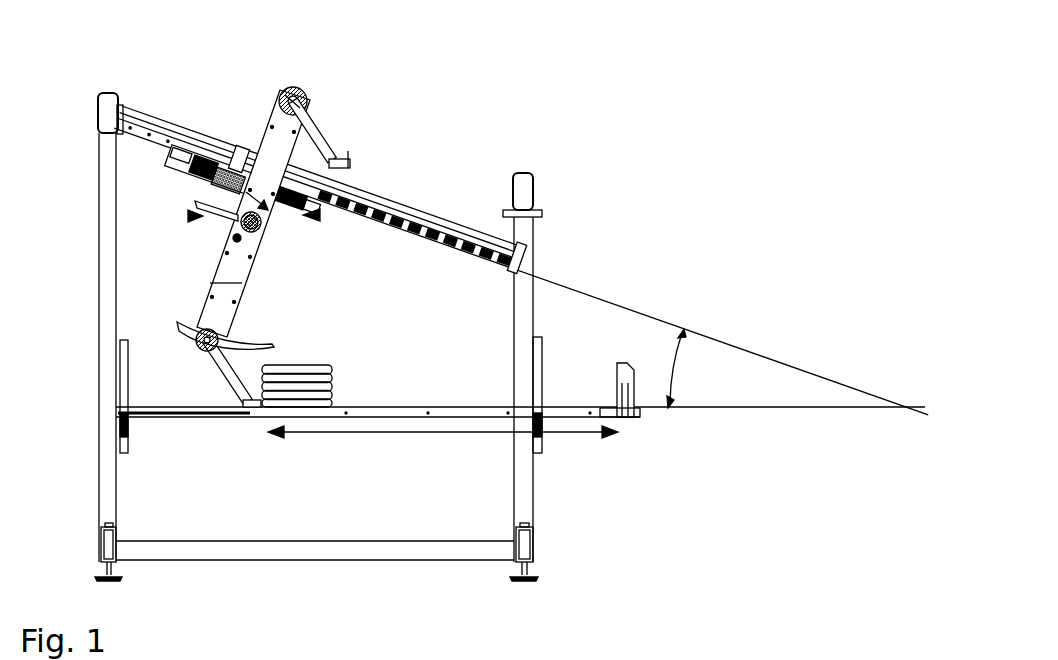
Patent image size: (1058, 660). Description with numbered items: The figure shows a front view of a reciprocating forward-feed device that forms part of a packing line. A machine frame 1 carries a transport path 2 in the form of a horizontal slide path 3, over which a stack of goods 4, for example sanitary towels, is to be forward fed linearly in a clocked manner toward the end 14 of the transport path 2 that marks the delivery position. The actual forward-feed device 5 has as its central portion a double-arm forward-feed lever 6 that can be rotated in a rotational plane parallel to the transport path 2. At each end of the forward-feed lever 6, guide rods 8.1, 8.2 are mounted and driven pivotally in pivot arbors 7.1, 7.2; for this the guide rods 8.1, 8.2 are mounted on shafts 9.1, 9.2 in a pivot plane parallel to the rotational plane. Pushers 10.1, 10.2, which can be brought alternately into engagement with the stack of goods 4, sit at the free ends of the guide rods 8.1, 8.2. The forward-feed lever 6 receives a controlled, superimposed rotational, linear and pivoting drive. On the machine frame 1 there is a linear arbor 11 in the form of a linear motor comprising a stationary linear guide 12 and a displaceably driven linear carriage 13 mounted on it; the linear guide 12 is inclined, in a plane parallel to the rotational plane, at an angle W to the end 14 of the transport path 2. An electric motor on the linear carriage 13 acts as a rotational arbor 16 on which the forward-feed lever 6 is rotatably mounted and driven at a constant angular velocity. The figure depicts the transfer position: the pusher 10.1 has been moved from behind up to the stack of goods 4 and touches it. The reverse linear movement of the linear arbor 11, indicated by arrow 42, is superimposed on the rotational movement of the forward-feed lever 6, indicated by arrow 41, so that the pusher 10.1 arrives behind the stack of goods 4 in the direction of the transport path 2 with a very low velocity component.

The machine frame 1 is at (265, 559).
The transport path 2 is at (453, 433).
The horizontal slide path 3 is at (378, 406).
The stack of goods 4 is at (304, 366).
The forward-feed device 5 is at (189, 215).
The forward-feed lever 6 is at (215, 277).
The pivot arbor 7.1 is at (196, 343).
The pivot arbor 7.2 is at (298, 90).
The guide rod 8.1 is at (227, 377).
The guide rod 8.2 is at (330, 145).
The shaft 9.1 is at (178, 325).
The shaft 9.2 is at (283, 90).
The pusher 10.1 is at (241, 403).
The pusher 10.2 is at (352, 158).
The linear arbor 11 is at (407, 207).
The linear guide 12 is at (450, 230).
The linear carriage 13 is at (237, 148).
The end of the transport path 14 is at (627, 419).
The rotational arbor 16 is at (232, 229).
The arrow 41 is at (210, 283).
The arrow 42 is at (197, 173).
The angle W is at (661, 368).